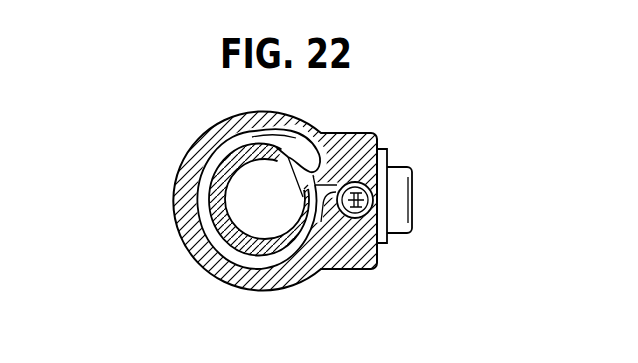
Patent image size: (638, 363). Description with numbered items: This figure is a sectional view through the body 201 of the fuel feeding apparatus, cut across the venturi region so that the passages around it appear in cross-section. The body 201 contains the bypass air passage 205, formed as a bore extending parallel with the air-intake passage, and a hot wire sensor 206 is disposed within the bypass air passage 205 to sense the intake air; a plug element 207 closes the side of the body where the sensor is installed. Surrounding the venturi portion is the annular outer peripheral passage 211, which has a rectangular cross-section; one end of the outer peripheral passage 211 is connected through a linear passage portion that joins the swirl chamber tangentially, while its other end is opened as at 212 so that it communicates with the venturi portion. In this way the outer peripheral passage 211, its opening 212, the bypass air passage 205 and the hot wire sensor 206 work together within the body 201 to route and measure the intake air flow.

The body 201 is at (286, 282).
The bypass air passage 205 is at (355, 208).
The hot wire sensor 206 is at (364, 200).
The plug 207 is at (397, 170).
The outer peripheral passage 211 is at (220, 255).
The opening 212 is at (286, 172).